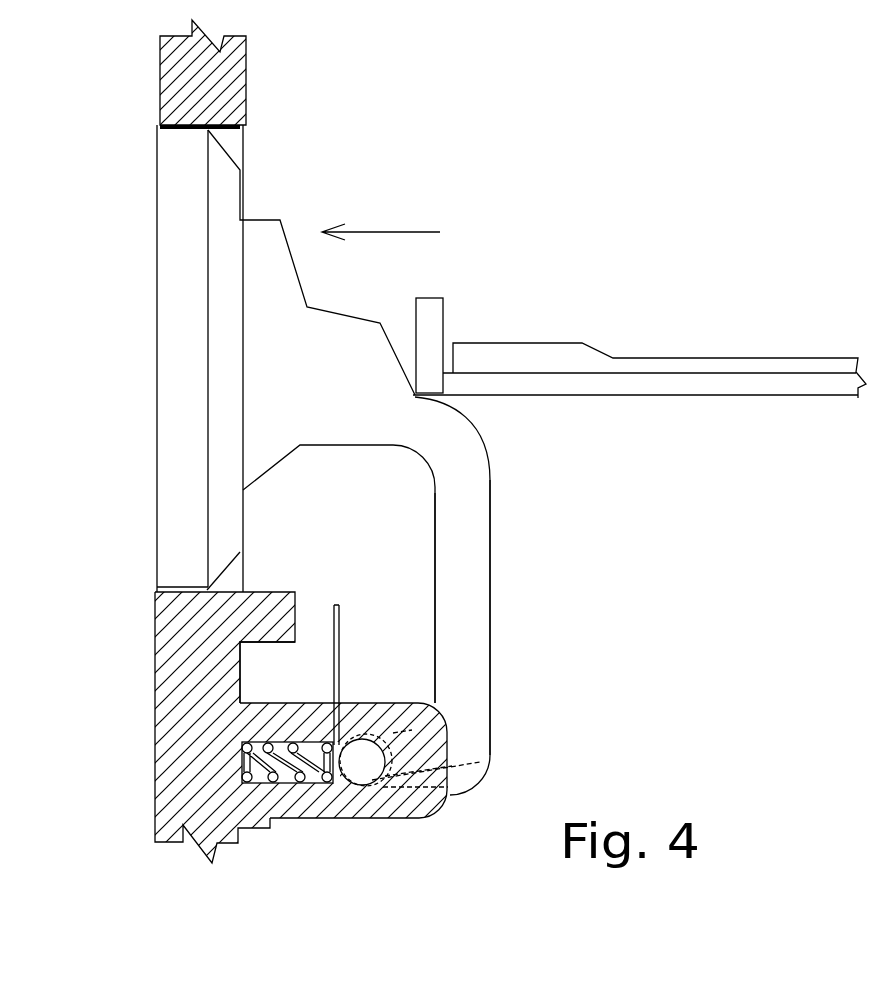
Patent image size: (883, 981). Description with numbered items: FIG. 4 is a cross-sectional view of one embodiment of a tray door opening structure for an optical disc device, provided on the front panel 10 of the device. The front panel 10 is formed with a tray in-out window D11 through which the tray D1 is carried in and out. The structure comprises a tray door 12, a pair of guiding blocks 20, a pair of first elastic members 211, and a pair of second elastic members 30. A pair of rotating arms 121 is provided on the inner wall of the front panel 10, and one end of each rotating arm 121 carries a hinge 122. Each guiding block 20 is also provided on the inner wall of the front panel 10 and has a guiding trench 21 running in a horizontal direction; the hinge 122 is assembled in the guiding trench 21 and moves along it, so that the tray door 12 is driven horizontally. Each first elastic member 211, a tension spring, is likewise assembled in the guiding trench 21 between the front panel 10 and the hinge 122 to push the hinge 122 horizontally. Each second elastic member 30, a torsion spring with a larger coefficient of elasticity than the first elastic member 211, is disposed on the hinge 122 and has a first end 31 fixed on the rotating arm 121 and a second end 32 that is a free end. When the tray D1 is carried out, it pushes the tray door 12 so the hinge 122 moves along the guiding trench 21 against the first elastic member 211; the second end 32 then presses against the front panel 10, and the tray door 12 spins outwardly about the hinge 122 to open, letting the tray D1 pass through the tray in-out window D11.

The front panel 10 is at (167, 82).
The tray in-out window D11 is at (240, 132).
The tray door 12 is at (180, 313).
The rotating arm 121 is at (443, 570).
The hinge 122 is at (362, 767).
The guiding block 20 is at (358, 717).
The guiding trench 21 is at (318, 781).
The first elastic member 211 is at (324, 782).
The second elastic member 30 is at (324, 609).
The first end 31 is at (452, 768).
The second end 32 is at (333, 678).
The tray D1 is at (673, 367).